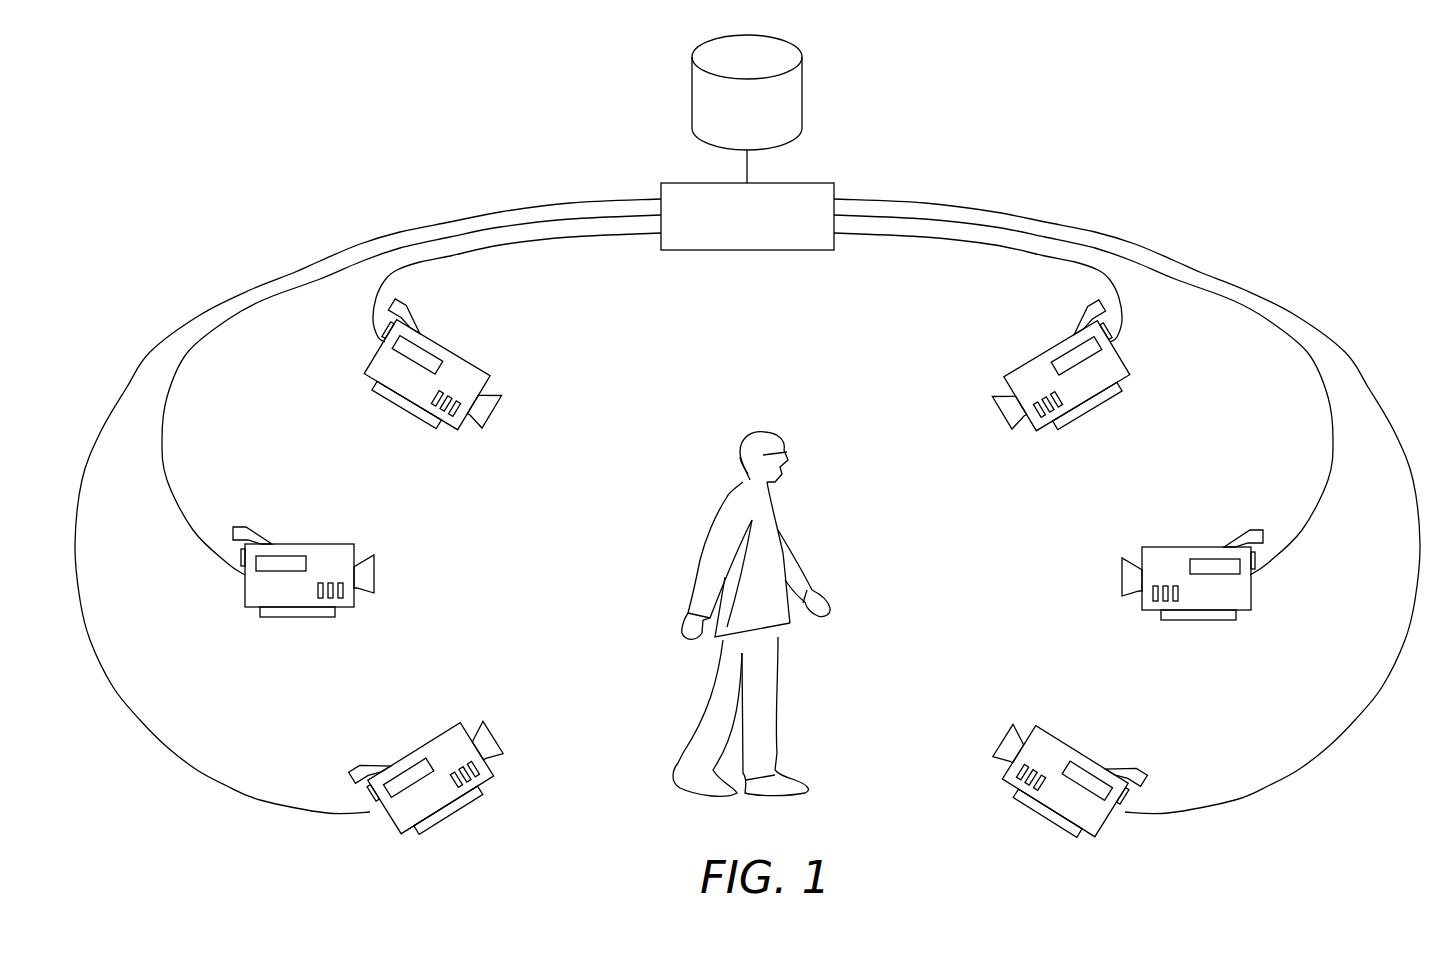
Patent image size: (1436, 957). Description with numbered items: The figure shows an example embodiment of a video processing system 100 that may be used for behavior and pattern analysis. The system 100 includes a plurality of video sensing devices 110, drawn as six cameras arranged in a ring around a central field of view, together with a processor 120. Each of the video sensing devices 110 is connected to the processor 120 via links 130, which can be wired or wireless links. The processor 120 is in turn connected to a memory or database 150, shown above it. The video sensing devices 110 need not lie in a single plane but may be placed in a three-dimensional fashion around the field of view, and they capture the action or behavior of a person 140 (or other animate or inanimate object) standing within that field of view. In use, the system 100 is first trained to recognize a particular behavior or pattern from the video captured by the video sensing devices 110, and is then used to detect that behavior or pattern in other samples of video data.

The video processing system 100 is at (1221, 69).
The video sensing devices 110 is at (462, 364).
The processor 120 is at (677, 181).
The links 130 is at (984, 192).
The person 140 is at (758, 428).
The memory or database 150 is at (803, 90).